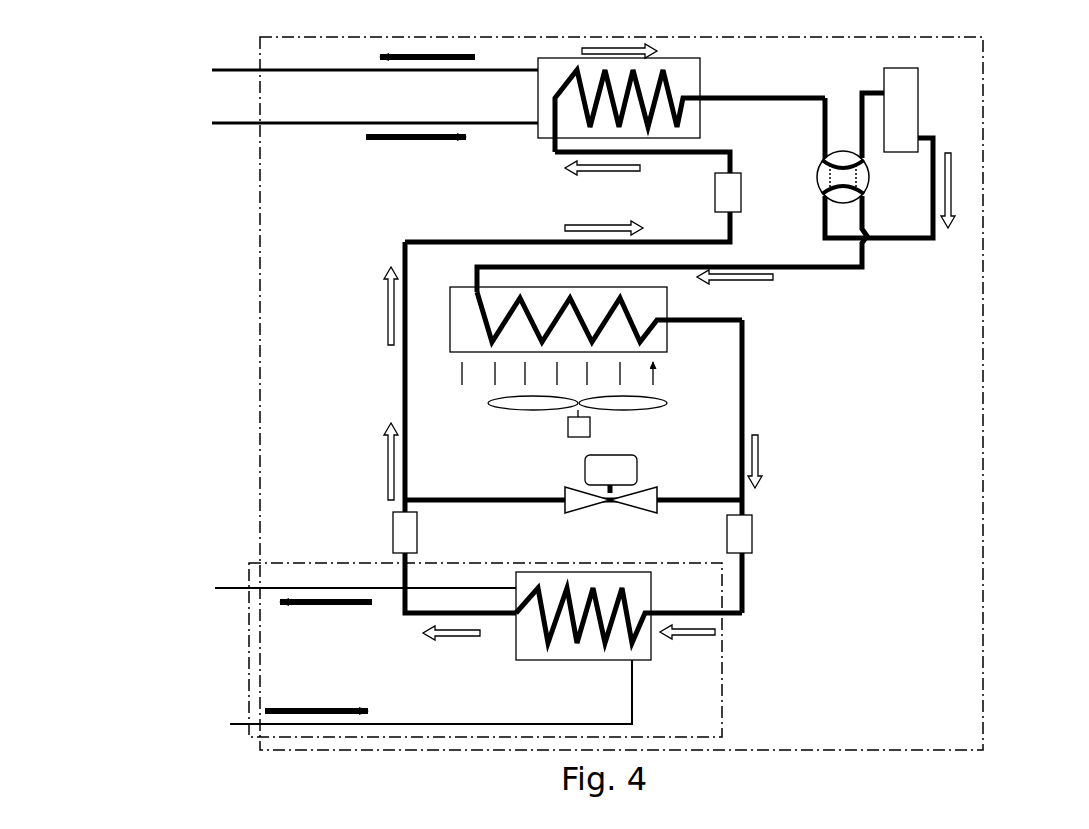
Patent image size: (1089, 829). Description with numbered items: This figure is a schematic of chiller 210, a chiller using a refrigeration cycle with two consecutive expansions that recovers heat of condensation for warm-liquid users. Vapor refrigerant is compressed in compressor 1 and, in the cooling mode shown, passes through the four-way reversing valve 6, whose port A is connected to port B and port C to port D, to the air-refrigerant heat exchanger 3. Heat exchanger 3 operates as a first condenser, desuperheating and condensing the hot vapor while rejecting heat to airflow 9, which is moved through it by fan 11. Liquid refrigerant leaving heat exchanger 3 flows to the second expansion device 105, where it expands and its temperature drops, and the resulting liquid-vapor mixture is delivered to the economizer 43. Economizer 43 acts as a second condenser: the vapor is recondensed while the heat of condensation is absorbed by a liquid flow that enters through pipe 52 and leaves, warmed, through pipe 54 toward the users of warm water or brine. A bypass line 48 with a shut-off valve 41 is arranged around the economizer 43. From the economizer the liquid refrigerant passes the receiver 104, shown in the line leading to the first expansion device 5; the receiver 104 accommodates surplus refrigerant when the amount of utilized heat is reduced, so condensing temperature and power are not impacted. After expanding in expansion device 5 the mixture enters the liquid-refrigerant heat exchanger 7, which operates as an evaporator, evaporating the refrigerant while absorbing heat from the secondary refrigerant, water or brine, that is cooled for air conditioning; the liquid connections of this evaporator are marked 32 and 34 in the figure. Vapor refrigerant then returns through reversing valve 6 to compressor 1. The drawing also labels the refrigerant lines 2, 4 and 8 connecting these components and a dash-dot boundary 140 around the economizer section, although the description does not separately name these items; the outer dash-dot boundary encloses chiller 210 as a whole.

The compressor 1 is at (897, 112).
The refrigerant pipe 2 is at (915, 240).
The air-refrigerant heat exchanger 3 is at (462, 337).
The refrigerant pipe 4 is at (745, 422).
The expansion device 5 is at (727, 193).
The 4-way reversing valve 6 is at (866, 177).
The liquid-refrigerant heat exchanger 7 is at (572, 120).
The refrigerant pipe 8 is at (452, 242).
The airflow 9 is at (633, 365).
The fan 11 is at (533, 404).
The water inlet line 32 is at (352, 123).
The water outlet line 34 is at (247, 70).
The shut-off valve 41 is at (645, 500).
The economizer 43 is at (630, 653).
The bypass line 48 is at (533, 502).
The pipe 52 is at (467, 723).
The pipe 54 is at (392, 589).
The receiver 104 is at (405, 535).
The second expansion device 105 is at (740, 537).
The unit 140 is at (729, 670).
The chiller 210 is at (985, 288).